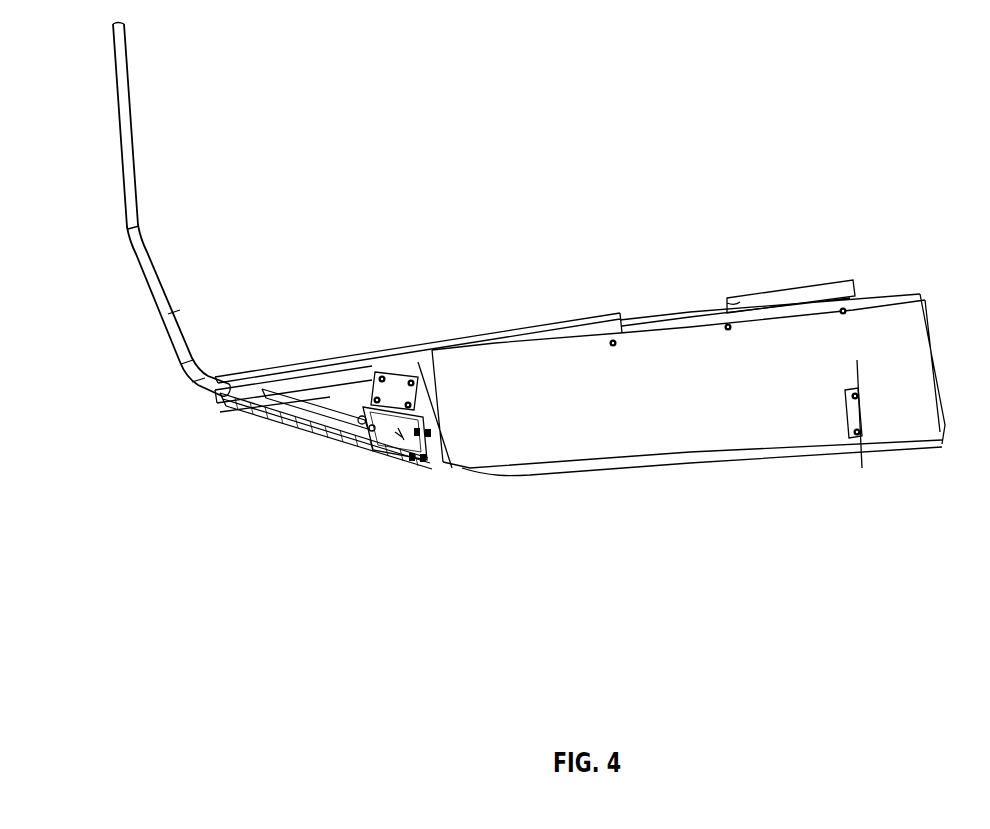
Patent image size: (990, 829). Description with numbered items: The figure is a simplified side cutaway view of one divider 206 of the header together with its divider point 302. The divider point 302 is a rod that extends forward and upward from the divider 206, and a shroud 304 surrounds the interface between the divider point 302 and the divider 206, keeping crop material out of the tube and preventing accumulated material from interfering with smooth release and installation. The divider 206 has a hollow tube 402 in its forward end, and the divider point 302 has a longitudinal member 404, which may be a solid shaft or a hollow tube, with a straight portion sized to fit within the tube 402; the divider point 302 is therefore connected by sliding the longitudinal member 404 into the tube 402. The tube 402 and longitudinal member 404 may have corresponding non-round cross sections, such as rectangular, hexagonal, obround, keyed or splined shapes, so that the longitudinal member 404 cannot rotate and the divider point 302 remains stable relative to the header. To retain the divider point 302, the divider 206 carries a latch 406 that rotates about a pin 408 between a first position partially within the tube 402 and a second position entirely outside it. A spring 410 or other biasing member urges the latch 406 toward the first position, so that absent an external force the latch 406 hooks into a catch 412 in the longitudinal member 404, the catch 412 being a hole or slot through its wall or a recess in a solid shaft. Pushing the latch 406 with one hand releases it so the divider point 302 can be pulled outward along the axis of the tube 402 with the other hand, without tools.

The divider 206 is at (557, 323).
The divider point 302 is at (153, 296).
The shroud 304 is at (203, 394).
The hollow tube 402 is at (270, 373).
The longitudinal member 404 is at (272, 400).
The latch 406 is at (312, 418).
The pin 408 is at (368, 380).
The spring 410 is at (368, 428).
The catch 412 is at (318, 385).